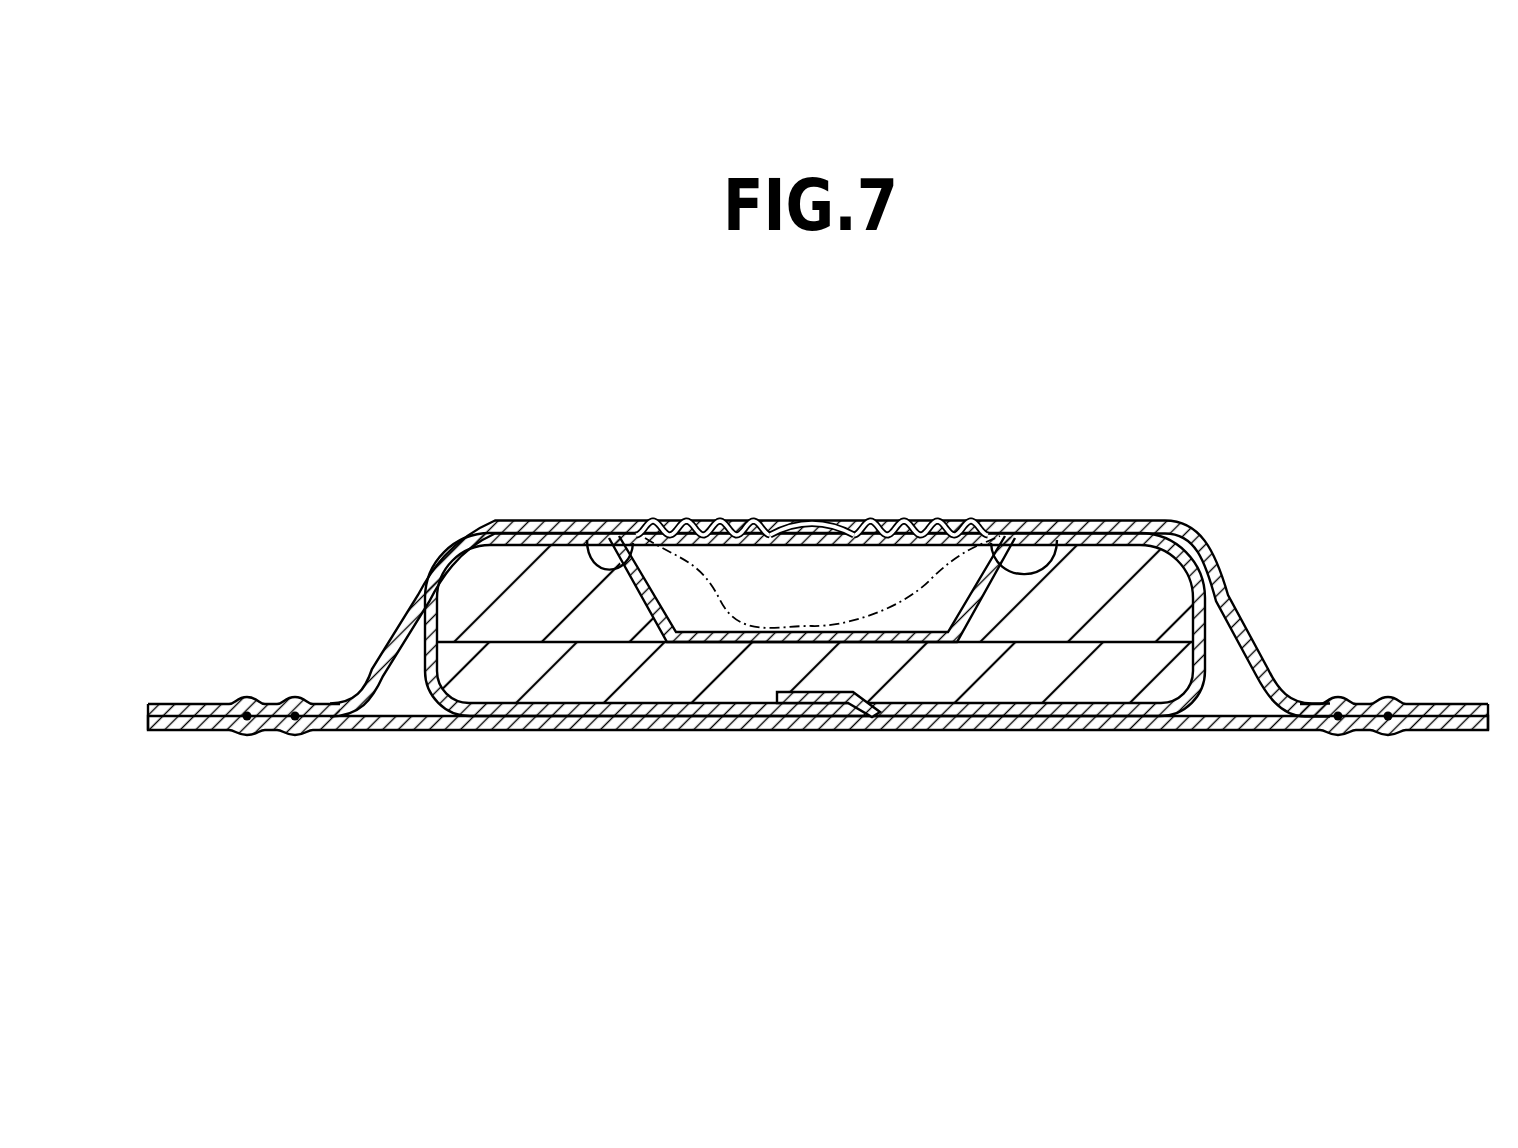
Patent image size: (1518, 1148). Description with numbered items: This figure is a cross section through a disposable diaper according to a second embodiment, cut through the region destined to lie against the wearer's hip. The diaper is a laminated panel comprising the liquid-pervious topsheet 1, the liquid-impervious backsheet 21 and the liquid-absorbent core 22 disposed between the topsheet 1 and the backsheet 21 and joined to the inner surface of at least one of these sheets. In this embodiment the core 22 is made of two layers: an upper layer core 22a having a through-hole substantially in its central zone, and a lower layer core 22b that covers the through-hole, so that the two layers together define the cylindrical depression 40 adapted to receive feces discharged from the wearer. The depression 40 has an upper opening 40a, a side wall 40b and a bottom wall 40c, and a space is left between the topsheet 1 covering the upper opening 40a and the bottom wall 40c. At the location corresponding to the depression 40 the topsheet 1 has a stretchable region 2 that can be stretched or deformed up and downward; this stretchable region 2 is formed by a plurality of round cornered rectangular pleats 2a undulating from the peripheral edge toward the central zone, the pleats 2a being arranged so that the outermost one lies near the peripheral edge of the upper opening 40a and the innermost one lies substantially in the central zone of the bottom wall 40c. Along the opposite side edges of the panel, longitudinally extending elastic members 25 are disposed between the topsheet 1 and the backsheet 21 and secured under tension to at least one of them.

The topsheet 1 is at (1237, 630).
The stretchable region 2 is at (1010, 432).
The pleats 2a is at (627, 500).
The backsheet 21 is at (1239, 731).
The liquid-absorbent core 22 is at (1193, 566).
The upper layer core 22a is at (527, 614).
The lower layer core 22b is at (1113, 688).
The elastic members 25 is at (296, 736).
The depression 40 is at (758, 566).
The upper opening 40a is at (822, 545).
The side wall 40b is at (606, 567).
The bottom wall 40c is at (897, 643).